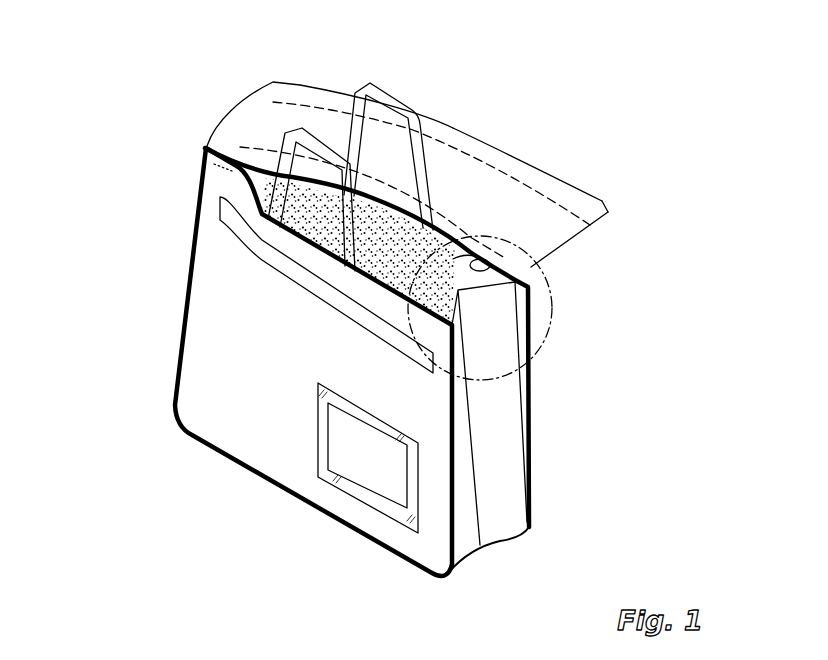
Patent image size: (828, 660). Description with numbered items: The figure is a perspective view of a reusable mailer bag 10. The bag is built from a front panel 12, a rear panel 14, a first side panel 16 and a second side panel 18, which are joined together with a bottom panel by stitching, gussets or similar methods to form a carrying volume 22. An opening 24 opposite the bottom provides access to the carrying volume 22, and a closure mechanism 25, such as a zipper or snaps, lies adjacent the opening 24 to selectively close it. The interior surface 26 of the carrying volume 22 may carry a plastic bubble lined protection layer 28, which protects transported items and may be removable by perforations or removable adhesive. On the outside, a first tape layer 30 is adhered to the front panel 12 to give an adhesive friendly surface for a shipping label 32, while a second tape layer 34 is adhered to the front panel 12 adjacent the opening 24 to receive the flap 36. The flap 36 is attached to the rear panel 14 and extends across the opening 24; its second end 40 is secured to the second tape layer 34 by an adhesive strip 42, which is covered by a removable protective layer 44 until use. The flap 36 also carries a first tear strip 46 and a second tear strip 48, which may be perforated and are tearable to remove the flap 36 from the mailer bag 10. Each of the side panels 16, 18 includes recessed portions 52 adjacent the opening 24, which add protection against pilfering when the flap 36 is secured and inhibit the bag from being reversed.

The mailer bag 10 is at (57, 66).
The front panel 12 is at (206, 308).
The rear panel 14 is at (455, 243).
The first side panel 16 is at (513, 485).
The second side panel 18 is at (252, 167).
The carrying volume 22 is at (331, 178).
The opening 24 is at (377, 268).
The closure mechanism 25 is at (492, 264).
The interior surface 26 is at (388, 208).
The plastic bubble lined protection layer 28 is at (431, 190).
The first tape layer 30 is at (397, 517).
The shipping label 32 is at (349, 479).
The second tape layer 34 is at (229, 220).
The flap 36 is at (560, 234).
The second end 40 is at (290, 93).
The adhesive strip 42 is at (606, 213).
The protective layer 44 is at (545, 183).
The first tear strip 46 is at (263, 148).
The second tear strip 48 is at (526, 184).
The recessed portions 52 is at (545, 325).